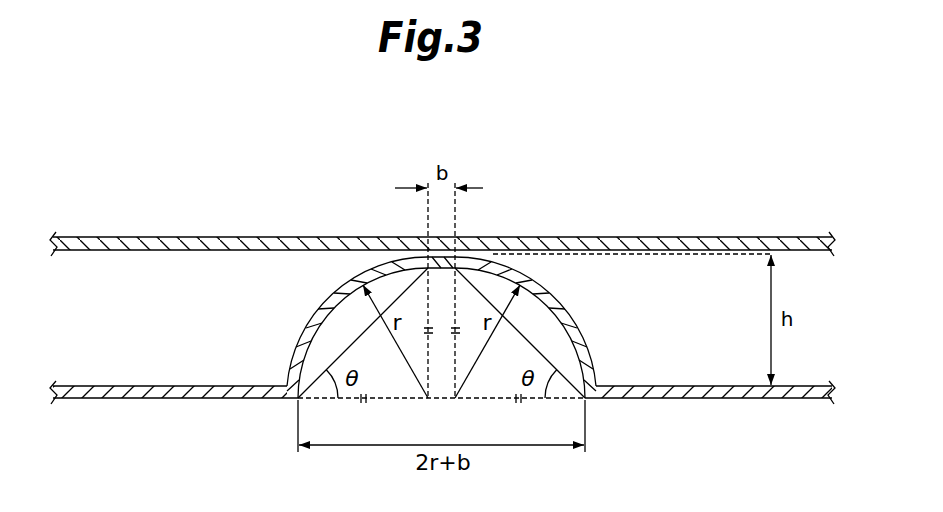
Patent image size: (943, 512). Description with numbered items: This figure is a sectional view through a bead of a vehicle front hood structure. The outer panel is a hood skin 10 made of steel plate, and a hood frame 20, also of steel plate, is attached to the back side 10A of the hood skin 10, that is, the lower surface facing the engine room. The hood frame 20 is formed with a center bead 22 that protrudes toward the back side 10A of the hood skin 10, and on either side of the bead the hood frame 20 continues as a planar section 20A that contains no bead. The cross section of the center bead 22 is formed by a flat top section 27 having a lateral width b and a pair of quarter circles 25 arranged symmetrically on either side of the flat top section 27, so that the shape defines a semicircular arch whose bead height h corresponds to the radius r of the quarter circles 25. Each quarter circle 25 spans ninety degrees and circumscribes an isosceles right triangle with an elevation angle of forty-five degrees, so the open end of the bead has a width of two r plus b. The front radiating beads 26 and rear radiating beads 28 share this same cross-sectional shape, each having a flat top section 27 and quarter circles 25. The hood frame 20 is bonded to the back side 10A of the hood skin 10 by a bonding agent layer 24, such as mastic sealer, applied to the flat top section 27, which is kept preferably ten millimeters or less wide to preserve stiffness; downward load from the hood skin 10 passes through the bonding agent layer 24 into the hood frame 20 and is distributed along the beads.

The hood skin 10 is at (442, 212).
The back side of the hood skin 10A is at (584, 256).
The hood frame 20 is at (442, 429).
The planar section 20A is at (157, 400).
The center bead 22 is at (482, 290).
The front radiating beads 26 is at (482, 290).
The rear radiating beads 28 is at (482, 290).
The bonding agent layer 24 is at (450, 240).
The quarter circles 25 is at (302, 330).
The flat top section 27 is at (427, 252).